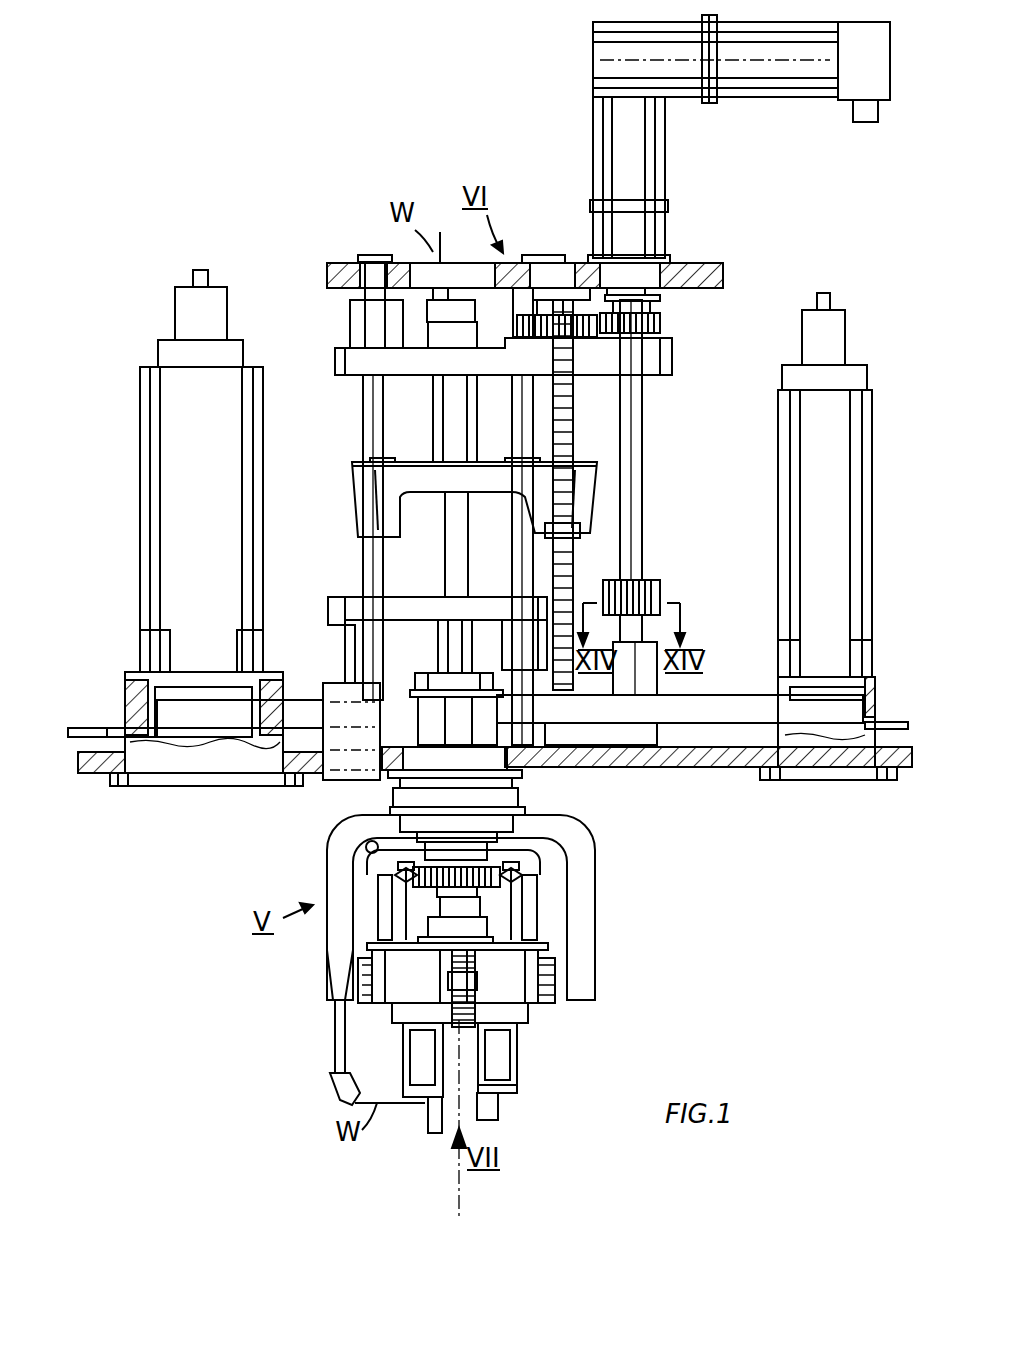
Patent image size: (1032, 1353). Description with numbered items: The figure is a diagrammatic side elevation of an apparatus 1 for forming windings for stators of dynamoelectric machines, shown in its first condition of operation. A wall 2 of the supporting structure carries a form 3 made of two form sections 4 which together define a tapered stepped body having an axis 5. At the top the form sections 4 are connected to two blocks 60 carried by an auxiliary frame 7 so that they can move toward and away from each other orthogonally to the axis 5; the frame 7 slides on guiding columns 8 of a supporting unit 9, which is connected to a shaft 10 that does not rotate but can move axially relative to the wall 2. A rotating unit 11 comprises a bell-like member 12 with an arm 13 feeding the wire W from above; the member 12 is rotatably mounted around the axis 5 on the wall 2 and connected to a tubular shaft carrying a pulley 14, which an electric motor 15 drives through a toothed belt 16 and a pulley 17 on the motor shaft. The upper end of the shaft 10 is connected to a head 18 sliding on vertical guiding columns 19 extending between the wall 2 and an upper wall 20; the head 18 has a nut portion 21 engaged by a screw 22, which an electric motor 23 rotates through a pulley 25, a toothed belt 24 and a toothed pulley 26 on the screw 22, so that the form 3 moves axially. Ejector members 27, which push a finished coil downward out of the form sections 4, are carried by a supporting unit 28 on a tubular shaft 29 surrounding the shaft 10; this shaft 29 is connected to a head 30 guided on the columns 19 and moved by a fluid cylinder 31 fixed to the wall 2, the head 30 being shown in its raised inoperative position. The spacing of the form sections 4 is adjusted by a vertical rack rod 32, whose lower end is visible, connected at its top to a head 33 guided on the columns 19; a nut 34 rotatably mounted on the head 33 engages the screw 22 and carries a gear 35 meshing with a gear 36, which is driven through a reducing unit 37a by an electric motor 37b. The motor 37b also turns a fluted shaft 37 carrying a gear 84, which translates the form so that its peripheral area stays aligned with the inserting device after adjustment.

The apparatus 1 is at (145, 272).
The wall 2 is at (693, 748).
The form 3 is at (518, 1103).
The form sections 4 is at (430, 1115).
The axis 5 is at (465, 1048).
The auxiliary frame 7 is at (520, 945).
The guiding columns 8 is at (385, 900).
The supporting unit 9 is at (537, 850).
The shaft 10 is at (453, 522).
The rotating unit 11 is at (327, 848).
The bell-like member 12 is at (333, 953).
The arm 13 is at (343, 1090).
The pulley 14 is at (438, 680).
The electric motor 15 is at (140, 515).
The toothed belt 16 is at (303, 708).
The pulley 17 is at (172, 737).
The head 18 is at (352, 485).
The guiding columns 19 is at (373, 415).
The upper wall 20 is at (688, 263).
The nut portion 21 is at (578, 532).
The screw 22 is at (578, 558).
The electric motor 23 is at (810, 433).
The toothed belt 24 is at (752, 712).
The pulley 25 is at (818, 692).
The toothed pulley 26 is at (600, 747).
The ejector members 27 is at (403, 1043).
The supporting unit 28 is at (428, 870).
The tubular shaft 29 is at (453, 638).
The head 30 is at (340, 600).
The fluid cylinder 31 is at (337, 700).
The rack rod 32 is at (480, 1012).
The head 33 is at (348, 360).
The nut 34 is at (548, 300).
The gear 35 is at (590, 338).
The gear 36 is at (663, 325).
The fluted shaft 37 is at (642, 410).
The reducing unit 37a is at (620, 133).
The electric motor 37b is at (755, 72).
The blocks 60 is at (413, 962).
The gear 84 is at (663, 590).